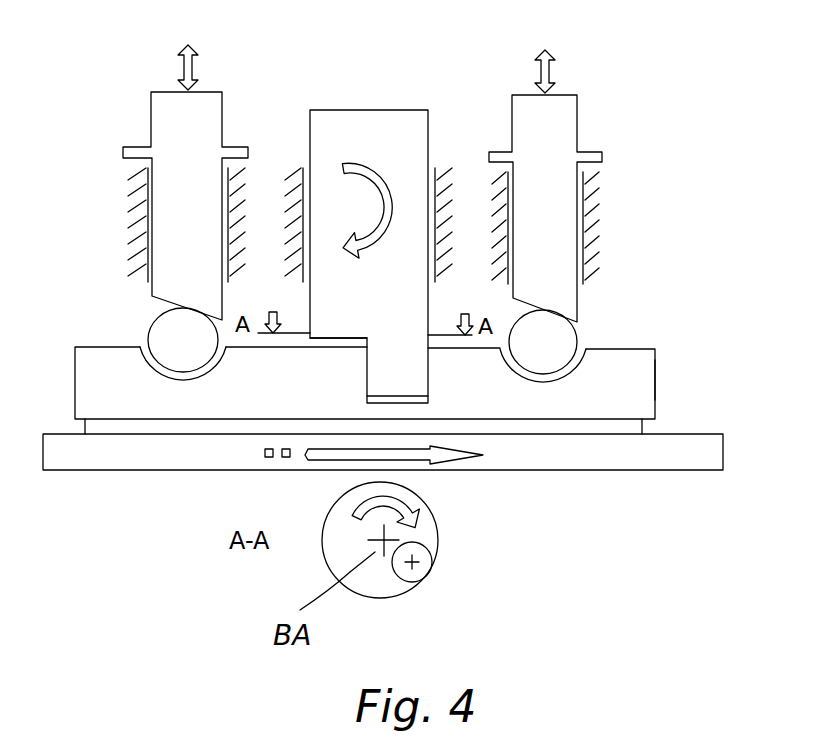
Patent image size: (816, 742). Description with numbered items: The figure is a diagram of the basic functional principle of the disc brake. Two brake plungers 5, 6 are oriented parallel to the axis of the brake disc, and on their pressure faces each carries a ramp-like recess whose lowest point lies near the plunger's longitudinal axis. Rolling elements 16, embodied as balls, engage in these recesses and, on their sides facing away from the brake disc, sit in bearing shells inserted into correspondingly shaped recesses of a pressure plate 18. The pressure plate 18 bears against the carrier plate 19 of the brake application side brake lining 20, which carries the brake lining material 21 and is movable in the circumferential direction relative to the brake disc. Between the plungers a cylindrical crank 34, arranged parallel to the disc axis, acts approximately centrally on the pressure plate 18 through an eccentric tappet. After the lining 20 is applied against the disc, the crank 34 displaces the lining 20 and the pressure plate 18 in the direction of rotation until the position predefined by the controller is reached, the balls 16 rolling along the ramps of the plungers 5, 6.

The brake plunger 5 is at (163, 118).
The brake plunger 6 is at (562, 119).
The crank 34 is at (407, 137).
The rolling element 16 is at (577, 337).
The pressure plate 18 is at (655, 365).
The carrier plate 19 is at (650, 423).
The brake lining 20 is at (662, 385).
The brake lining material 21 is at (320, 455).